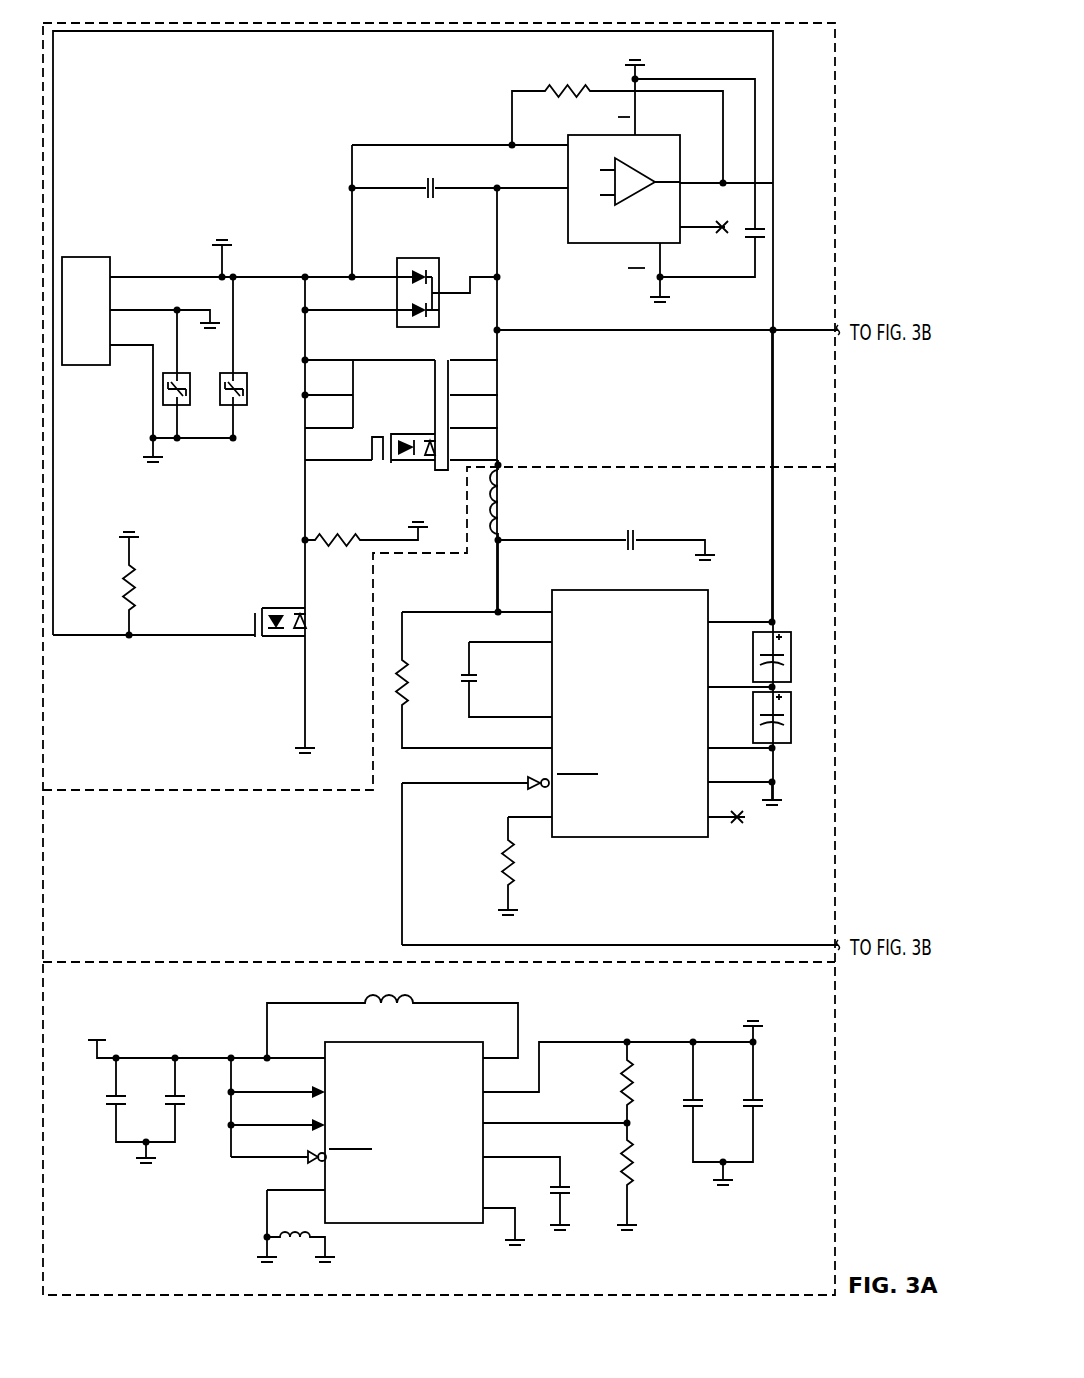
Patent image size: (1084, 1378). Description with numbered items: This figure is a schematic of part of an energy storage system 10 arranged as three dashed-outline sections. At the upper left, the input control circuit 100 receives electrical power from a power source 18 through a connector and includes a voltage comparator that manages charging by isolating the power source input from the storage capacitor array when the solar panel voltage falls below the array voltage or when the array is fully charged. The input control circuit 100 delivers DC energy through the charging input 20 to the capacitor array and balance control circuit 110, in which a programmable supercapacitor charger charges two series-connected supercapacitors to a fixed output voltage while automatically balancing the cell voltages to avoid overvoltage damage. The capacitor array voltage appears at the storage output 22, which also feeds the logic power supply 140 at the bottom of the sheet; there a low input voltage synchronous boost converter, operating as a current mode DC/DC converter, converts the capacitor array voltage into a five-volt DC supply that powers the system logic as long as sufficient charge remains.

The energy storage system 10 is at (872, 131).
The power source 18 is at (106, 258).
The charging input 20 is at (500, 463).
The storage output 22 is at (772, 407).
The input control circuit 100 is at (189, 792).
The capacitor array and balance control circuit 110 is at (373, 880).
The logic power supply 140 is at (240, 960).